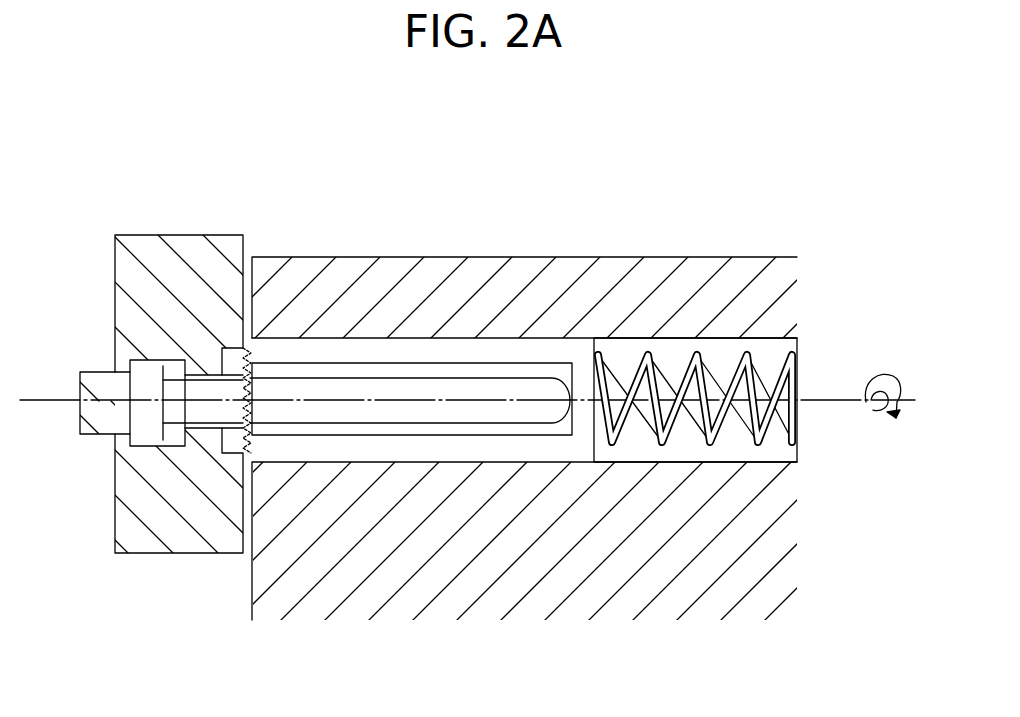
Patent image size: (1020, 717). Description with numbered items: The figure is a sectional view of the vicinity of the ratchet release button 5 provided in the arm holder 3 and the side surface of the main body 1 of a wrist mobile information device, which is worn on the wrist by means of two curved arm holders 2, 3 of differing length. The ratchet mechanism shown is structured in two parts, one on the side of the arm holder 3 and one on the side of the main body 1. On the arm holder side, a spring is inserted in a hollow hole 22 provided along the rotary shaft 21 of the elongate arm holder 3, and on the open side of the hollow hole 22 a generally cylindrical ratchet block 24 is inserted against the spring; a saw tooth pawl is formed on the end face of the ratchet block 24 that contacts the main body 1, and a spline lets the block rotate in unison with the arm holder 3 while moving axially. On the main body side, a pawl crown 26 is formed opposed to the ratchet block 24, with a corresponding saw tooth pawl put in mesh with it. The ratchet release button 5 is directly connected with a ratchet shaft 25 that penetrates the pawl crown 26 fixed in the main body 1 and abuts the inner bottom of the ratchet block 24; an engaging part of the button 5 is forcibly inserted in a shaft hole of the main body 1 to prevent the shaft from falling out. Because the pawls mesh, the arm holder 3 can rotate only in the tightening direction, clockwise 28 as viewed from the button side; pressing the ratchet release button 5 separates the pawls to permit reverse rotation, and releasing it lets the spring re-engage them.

The main body 1 is at (140, 270).
The arm holder 2 is at (648, 358).
The arm holder 3 is at (752, 268).
The ratchet release button 5 is at (95, 383).
The rotary shaft 21 is at (837, 402).
The hollow hole 22 is at (770, 332).
The ratchet block 24 is at (566, 352).
The ratchet shaft 25 is at (468, 390).
The pawl crown 26 is at (232, 347).
The clockwise direction 28 is at (886, 430).